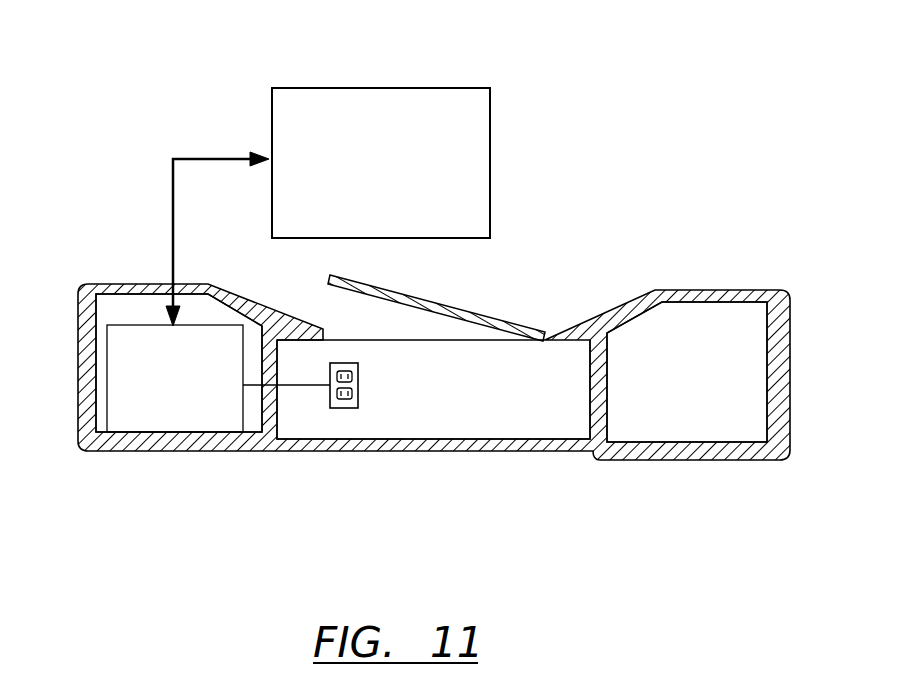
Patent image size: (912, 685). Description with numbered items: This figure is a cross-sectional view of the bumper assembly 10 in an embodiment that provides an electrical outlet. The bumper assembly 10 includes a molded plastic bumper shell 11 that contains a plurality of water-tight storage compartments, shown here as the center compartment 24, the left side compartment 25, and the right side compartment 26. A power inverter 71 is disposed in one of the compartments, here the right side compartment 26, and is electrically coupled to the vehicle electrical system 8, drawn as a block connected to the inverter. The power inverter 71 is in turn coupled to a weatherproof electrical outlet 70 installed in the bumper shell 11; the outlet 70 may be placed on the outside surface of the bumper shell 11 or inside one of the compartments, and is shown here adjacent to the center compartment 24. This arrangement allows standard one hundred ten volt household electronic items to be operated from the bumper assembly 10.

The vehicle electrical system 8 is at (413, 88).
The bumper assembly 10 is at (212, 525).
The bumper shell 11 is at (793, 367).
The center compartment 24 is at (482, 395).
The left side compartment 25 is at (670, 382).
The right side compartment 26 is at (138, 307).
The weatherproof electrical outlet 70 is at (330, 403).
The power inverter 71 is at (128, 348).